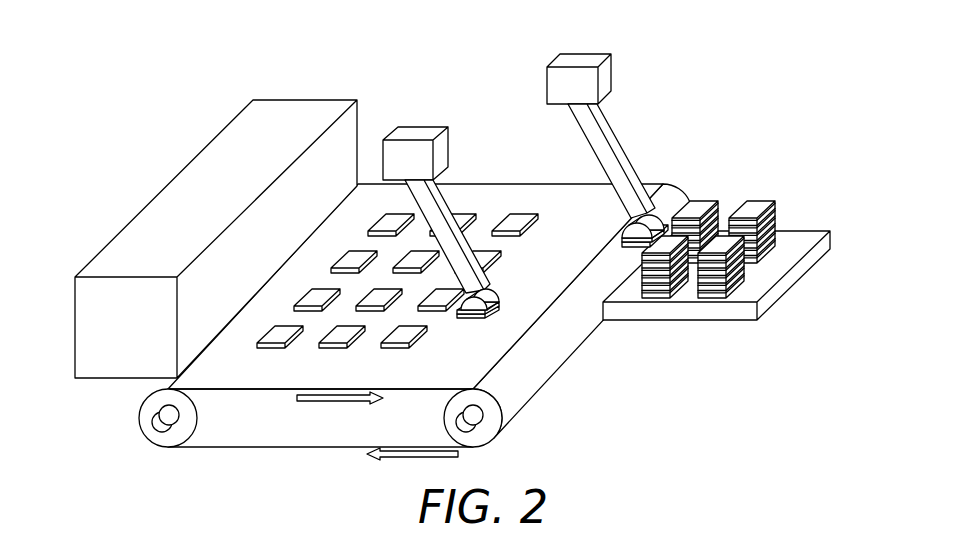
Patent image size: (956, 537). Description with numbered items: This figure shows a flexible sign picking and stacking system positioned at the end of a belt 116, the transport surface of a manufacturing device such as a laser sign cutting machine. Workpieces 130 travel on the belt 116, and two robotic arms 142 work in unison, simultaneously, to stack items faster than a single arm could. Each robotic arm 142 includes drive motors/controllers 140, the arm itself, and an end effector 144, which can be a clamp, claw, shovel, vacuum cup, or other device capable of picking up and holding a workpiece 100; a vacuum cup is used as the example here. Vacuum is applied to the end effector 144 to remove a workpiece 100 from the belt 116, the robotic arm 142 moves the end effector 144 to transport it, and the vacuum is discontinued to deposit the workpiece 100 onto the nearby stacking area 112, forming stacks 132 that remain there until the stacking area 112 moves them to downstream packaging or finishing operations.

The workpiece 100 is at (167, 187).
The stacking area 112 is at (723, 313).
The belt 116 is at (299, 447).
The workpieces 130 is at (368, 215).
The stacks 132 is at (750, 212).
The drive motors/controllers 140 is at (421, 127).
The robotic arm 142 is at (448, 207).
The end effector 144 is at (492, 292).